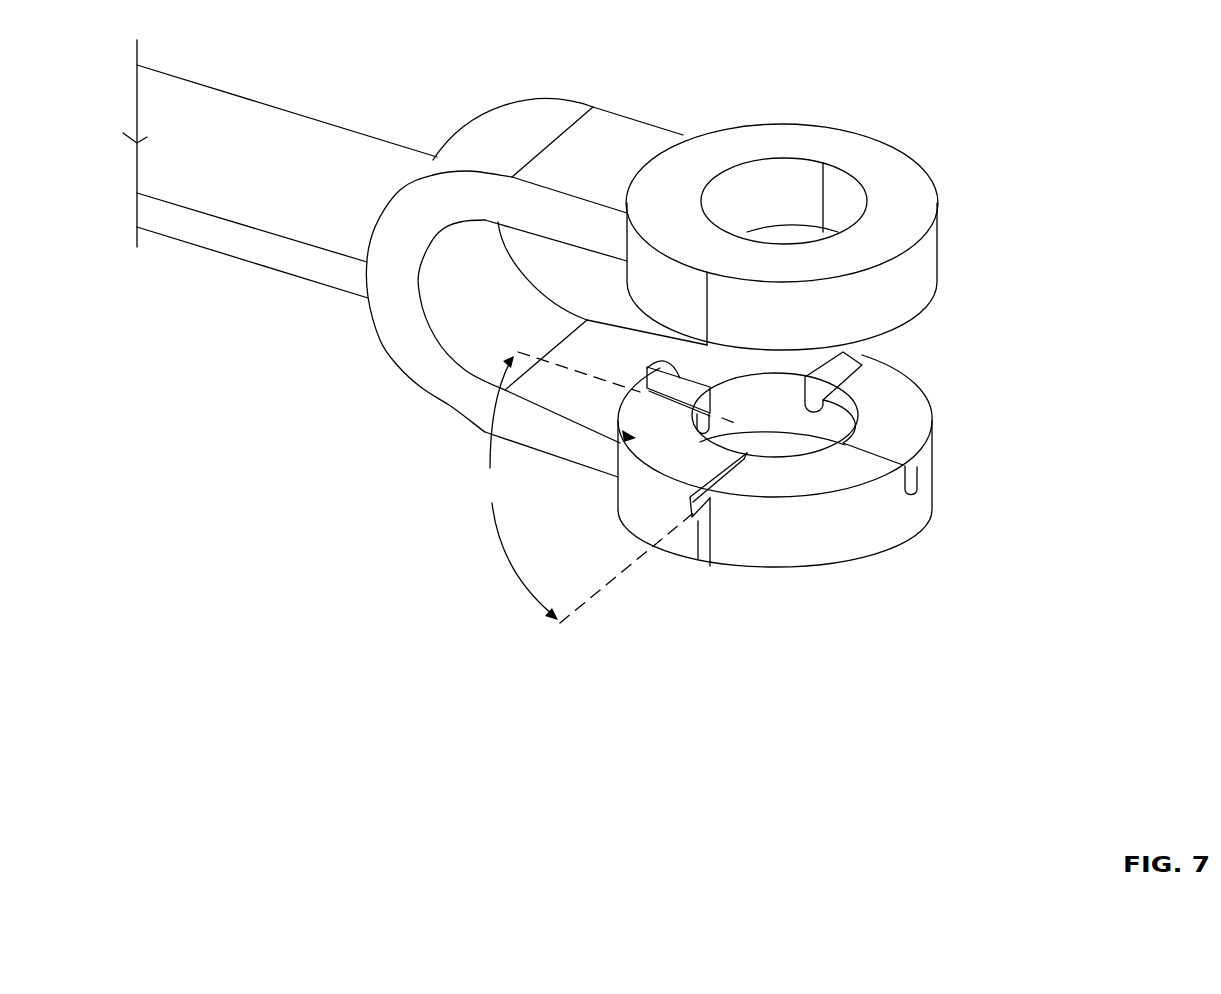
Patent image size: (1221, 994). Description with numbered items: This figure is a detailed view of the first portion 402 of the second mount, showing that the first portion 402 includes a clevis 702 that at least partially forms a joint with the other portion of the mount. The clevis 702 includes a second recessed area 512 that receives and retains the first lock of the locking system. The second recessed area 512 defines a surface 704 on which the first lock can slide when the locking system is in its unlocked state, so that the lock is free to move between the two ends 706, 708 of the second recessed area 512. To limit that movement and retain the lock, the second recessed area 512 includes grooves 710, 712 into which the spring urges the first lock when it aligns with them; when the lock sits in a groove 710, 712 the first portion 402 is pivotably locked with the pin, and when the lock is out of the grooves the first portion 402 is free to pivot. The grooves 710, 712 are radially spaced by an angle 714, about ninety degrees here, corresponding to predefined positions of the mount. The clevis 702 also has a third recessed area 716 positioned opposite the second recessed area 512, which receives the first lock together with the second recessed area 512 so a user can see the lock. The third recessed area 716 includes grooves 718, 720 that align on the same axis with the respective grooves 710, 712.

The first portion 402 is at (246, 164).
The clevis 702 is at (527, 100).
The surface 704 is at (655, 465).
The end of the second recessed area 706 is at (658, 358).
The end of the second recessed area 708 is at (735, 470).
The groove 710 is at (709, 408).
The groove 712 is at (705, 515).
The angle 714 is at (486, 489).
The third recessed area 716 is at (900, 418).
The groove 718 is at (912, 498).
The groove 720 is at (845, 373).
The second recessed area 512 is at (626, 434).